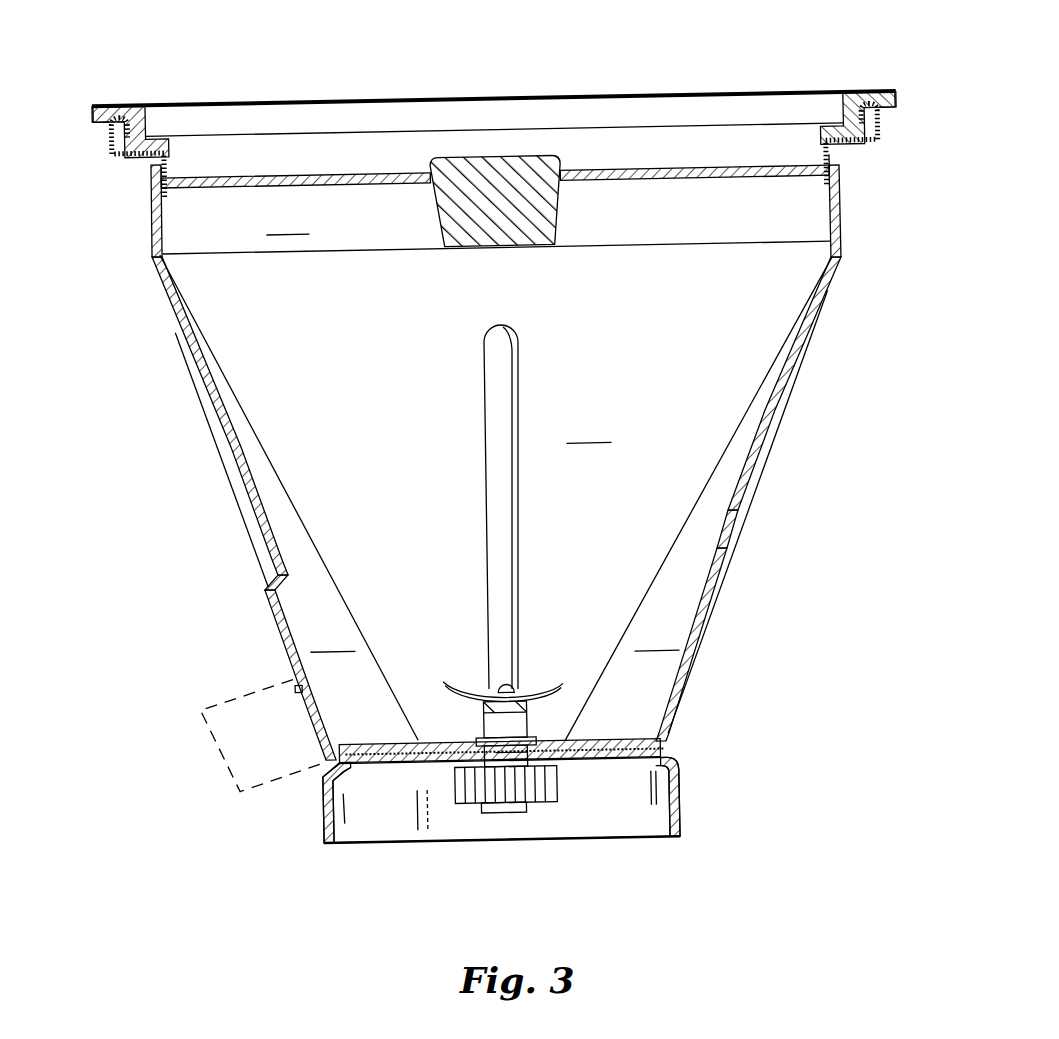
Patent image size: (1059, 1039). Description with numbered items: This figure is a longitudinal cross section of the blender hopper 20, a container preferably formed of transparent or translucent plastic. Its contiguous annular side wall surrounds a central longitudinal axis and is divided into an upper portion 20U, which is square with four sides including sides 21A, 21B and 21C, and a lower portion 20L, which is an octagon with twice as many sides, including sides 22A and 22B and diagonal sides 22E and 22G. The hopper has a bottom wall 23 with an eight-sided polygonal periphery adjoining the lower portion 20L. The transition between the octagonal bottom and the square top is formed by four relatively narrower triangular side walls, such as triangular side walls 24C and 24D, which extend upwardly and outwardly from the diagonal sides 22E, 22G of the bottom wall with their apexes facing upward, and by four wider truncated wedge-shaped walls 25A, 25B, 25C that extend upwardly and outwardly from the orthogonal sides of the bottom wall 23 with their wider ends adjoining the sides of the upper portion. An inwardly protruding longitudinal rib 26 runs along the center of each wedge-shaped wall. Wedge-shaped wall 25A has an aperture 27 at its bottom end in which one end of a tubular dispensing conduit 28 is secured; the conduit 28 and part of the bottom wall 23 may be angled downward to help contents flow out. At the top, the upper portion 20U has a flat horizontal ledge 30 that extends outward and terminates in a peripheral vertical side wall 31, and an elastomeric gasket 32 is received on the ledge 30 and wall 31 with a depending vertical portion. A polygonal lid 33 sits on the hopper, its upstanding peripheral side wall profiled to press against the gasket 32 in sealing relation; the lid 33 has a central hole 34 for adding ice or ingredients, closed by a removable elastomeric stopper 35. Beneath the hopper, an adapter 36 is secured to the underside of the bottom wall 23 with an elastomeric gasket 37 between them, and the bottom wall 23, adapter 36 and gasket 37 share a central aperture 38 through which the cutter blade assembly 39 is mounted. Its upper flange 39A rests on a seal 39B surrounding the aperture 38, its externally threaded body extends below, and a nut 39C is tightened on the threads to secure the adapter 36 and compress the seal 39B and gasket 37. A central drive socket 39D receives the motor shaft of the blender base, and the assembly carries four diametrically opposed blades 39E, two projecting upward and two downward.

The hopper 20 is at (769, 70).
The upper portion 20U is at (853, 222).
The lower portion 20L is at (709, 603).
The side 21A is at (155, 225).
The side 21B is at (846, 244).
The side 21C is at (292, 221).
The side 22A is at (269, 598).
The side 22B is at (686, 663).
The diagonal side 22E is at (691, 513).
The diagonal side 22G is at (308, 551).
The bottom wall 23 is at (403, 746).
The triangular side wall 24C is at (336, 638).
The triangular side wall 24D is at (661, 637).
The truncated wedge-shaped wall 25A is at (266, 580).
The truncated wedge-shaped wall 25B is at (739, 544).
The truncated wedge-shaped wall 25C is at (592, 429).
The longitudinal rib 26 is at (233, 389).
The aperture 27 is at (296, 684).
The tubular dispensing conduit 28 is at (269, 787).
The horizontal ledge 30 is at (156, 175).
The peripheral vertical side wall 31 is at (127, 122).
The gasket 32 is at (136, 142).
The lid 33 is at (678, 181).
The hole 34 is at (568, 201).
The stopper 35 is at (496, 164).
The adapter 36 is at (675, 793).
The gasket 37 is at (663, 753).
The central aperture 38 is at (482, 769).
The cutter blade assembly 39 is at (523, 720).
The upper flange 39A is at (575, 743).
The seal 39B is at (478, 727).
The nut 39C is at (552, 785).
The drive socket 39D is at (493, 814).
The blades 39E is at (479, 681).